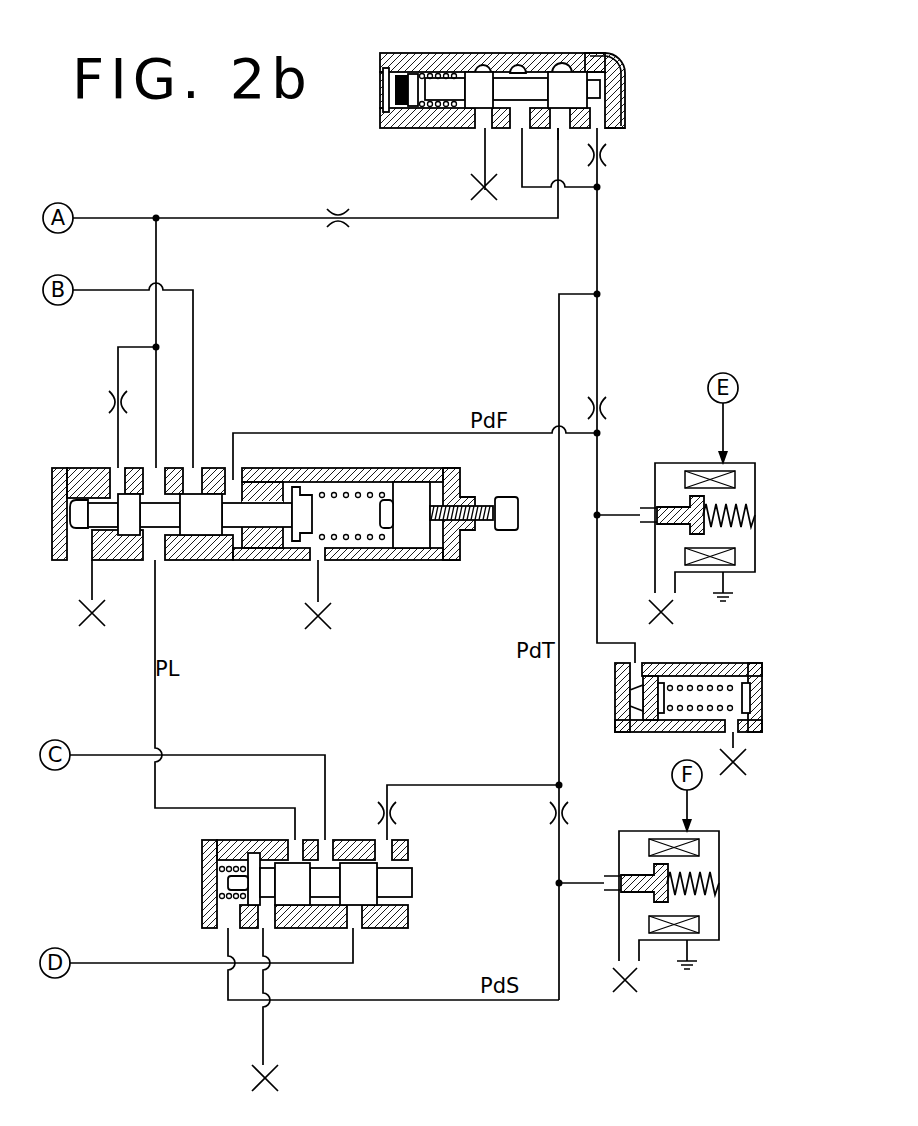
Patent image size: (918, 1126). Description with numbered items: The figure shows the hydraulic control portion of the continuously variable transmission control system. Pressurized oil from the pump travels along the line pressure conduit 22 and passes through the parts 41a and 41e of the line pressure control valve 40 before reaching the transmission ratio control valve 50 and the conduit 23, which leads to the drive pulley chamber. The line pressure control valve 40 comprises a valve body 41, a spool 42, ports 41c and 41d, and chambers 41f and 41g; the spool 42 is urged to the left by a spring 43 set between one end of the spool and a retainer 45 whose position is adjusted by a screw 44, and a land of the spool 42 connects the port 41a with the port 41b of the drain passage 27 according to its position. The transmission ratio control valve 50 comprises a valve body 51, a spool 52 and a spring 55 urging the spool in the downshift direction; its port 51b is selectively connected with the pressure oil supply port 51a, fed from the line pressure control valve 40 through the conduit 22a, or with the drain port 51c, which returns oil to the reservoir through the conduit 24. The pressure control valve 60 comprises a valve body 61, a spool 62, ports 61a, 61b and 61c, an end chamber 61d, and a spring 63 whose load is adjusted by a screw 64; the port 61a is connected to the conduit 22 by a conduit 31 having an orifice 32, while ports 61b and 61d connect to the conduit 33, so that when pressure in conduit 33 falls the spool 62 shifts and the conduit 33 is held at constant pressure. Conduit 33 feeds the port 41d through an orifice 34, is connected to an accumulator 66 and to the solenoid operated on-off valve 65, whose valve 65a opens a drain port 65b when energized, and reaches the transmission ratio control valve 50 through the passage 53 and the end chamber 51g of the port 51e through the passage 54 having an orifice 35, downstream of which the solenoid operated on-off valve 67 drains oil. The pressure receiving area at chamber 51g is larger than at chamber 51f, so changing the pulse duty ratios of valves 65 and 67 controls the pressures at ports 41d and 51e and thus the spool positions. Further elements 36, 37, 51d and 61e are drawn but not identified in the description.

The line pressure conduit 22 is at (122, 216).
The conduit 22a is at (157, 732).
The conduit 23 is at (125, 755).
The conduit 24 is at (136, 965).
The drain passage 27 is at (128, 290).
The conduit 31 is at (404, 225).
The orifice 32 is at (338, 227).
The conduit 33 is at (600, 242).
The orifice 34 is at (604, 408).
The orifice 35 is at (550, 813).
The orifice 36 is at (118, 383).
The line 37 is at (392, 433).
The line pressure control valve 40 is at (277, 509).
The valve body 41 is at (260, 509).
The port 41a is at (168, 456).
The drain port 41b is at (196, 462).
The port 41c is at (116, 467).
The port 41d is at (243, 468).
The port 41e is at (150, 562).
The chamber 41f is at (161, 562).
The chamber 41g is at (240, 550).
The spool 42 is at (201, 536).
The spring 43 is at (372, 541).
The screw 44 is at (505, 532).
The retainer 45 is at (420, 549).
The transmission ratio control valve 50 is at (320, 870).
The valve body 51 is at (320, 864).
The pressure oil supply port 51a is at (292, 840).
The port 51b is at (330, 836).
The drain port 51c is at (345, 921).
The port 51d is at (400, 850).
The port 51e is at (228, 930).
The chamber 51f is at (400, 913).
The end chamber 51g is at (226, 888).
The spool 52 is at (360, 906).
The passage 53 is at (455, 785).
The passage 54 is at (421, 1000).
The spring 55 is at (222, 868).
The pressure control valve 60 is at (544, 137).
The valve body 61 is at (545, 70).
The port 61a is at (556, 132).
The port 61b is at (518, 132).
The port 61c is at (478, 128).
The end chamber 61d is at (607, 130).
The housing wall 61e is at (618, 56).
The spool 62 is at (512, 108).
The spring 63 is at (447, 75).
The screw 64 is at (400, 64).
The solenoid operated on-off control valve 65 is at (676, 513).
The valve 65a is at (668, 526).
The drain port 65b is at (640, 508).
The accumulator 66 is at (740, 663).
The solenoid operated on-off control valve 67 is at (718, 930).